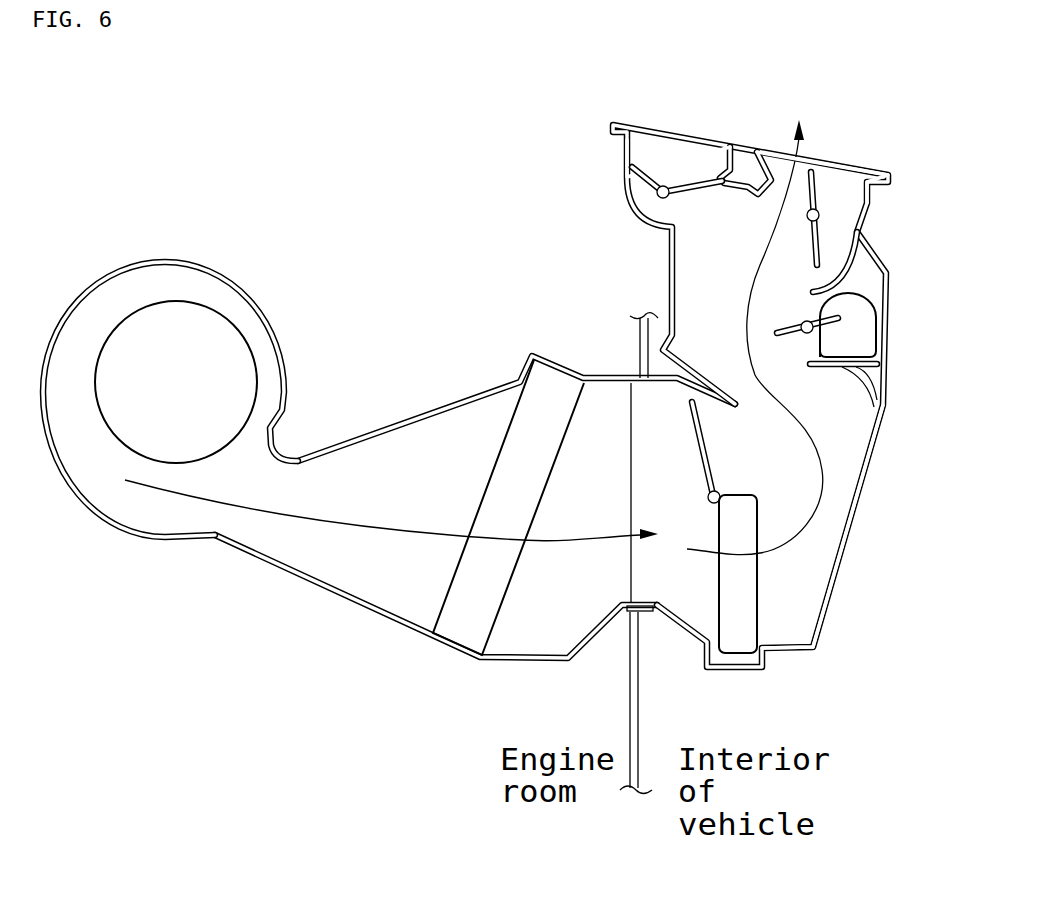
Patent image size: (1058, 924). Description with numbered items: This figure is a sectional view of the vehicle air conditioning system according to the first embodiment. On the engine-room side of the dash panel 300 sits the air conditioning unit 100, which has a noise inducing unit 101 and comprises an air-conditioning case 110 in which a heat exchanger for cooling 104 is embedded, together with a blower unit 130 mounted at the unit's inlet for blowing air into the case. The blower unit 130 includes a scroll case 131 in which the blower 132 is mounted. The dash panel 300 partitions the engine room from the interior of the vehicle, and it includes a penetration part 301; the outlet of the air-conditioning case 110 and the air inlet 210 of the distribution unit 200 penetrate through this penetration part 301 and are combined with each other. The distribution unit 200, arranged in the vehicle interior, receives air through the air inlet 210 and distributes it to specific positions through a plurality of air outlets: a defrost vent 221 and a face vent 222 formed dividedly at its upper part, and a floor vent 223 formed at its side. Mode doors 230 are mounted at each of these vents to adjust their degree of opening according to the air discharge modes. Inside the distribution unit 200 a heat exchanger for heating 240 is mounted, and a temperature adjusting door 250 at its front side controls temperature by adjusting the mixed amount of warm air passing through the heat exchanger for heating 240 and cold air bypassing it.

The air conditioning unit 100 is at (389, 442).
The noise inducing unit 101 is at (389, 442).
The heat exchanger for cooling 104 is at (443, 602).
The air-conditioning case 110 is at (505, 660).
The blower unit 130 is at (188, 395).
The scroll case 131 is at (143, 536).
The blower 132 is at (248, 348).
The distribution unit 200 is at (668, 257).
The air inlet 210 is at (638, 572).
The defrost vent 221 is at (674, 148).
The face vent 222 is at (840, 180).
The floor vent 223 is at (863, 327).
The mode doors 230 is at (632, 182).
The heat exchanger for heating 240 is at (743, 615).
The temperature adjusting door 250 is at (697, 445).
The dash panel 300 is at (621, 553).
The penetration part 301 is at (658, 639).